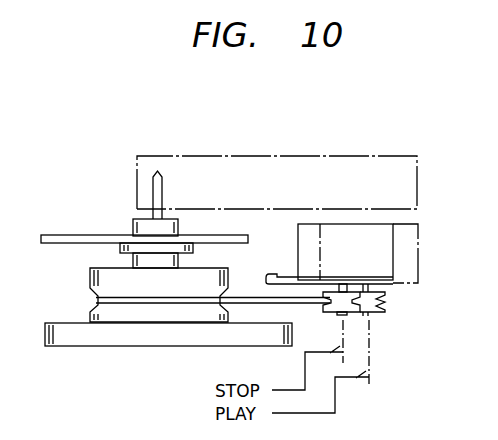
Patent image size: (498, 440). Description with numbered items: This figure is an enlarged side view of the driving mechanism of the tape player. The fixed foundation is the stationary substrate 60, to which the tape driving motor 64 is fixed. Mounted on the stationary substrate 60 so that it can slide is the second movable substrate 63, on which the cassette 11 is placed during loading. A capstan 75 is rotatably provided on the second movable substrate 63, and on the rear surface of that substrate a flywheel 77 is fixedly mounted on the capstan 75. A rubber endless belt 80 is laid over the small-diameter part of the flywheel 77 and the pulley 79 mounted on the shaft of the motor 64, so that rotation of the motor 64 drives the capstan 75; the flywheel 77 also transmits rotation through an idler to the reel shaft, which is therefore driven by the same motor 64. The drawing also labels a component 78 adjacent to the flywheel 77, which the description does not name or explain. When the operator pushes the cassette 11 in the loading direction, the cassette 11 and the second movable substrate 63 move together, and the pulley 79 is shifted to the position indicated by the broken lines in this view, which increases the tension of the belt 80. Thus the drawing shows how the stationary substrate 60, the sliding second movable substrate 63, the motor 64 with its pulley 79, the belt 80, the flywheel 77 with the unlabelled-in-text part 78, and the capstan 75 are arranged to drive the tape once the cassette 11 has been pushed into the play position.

The cassette 11 is at (413, 170).
The stationary substrate 60 is at (388, 287).
The second movable substrate 63 is at (72, 235).
The tape driving motor 64 is at (308, 227).
The capstan 75 is at (160, 172).
The flywheel 77 is at (100, 340).
The drive pulley 78 is at (95, 280).
The pulley 79 is at (350, 315).
The rubber endless belt 80 is at (243, 308).